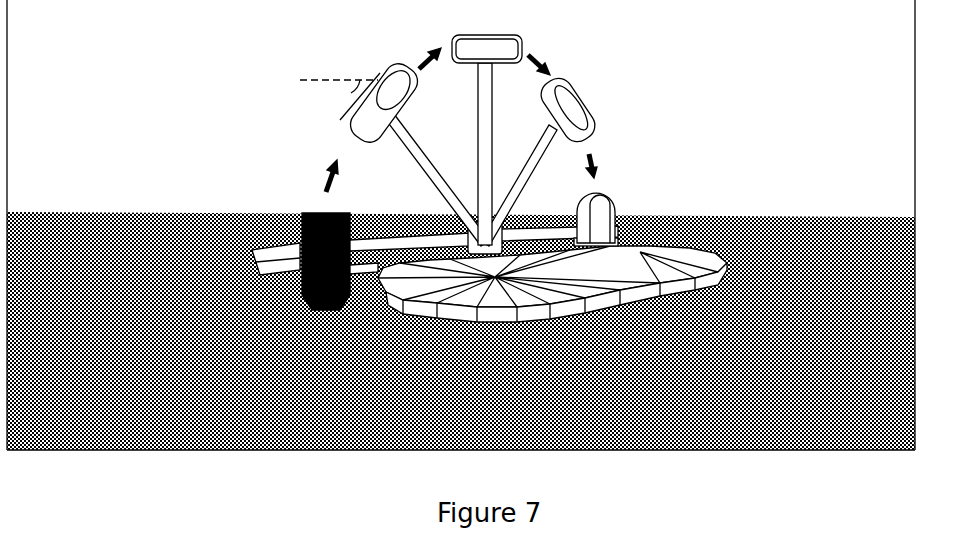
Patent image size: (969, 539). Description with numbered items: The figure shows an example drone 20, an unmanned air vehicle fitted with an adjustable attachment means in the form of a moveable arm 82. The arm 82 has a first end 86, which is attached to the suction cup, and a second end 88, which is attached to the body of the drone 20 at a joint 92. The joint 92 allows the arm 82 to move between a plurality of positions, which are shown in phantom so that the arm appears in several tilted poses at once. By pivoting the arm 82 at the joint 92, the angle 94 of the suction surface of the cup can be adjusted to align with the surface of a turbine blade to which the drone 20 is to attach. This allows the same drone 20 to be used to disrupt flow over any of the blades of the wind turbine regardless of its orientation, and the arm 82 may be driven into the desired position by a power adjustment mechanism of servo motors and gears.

The drone 20 is at (244, 357).
The moveable arm 82 is at (539, 311).
The first end 86 is at (361, 346).
The second end 88 is at (463, 242).
The joint 92 is at (483, 232).
The angle 94 is at (347, 90).